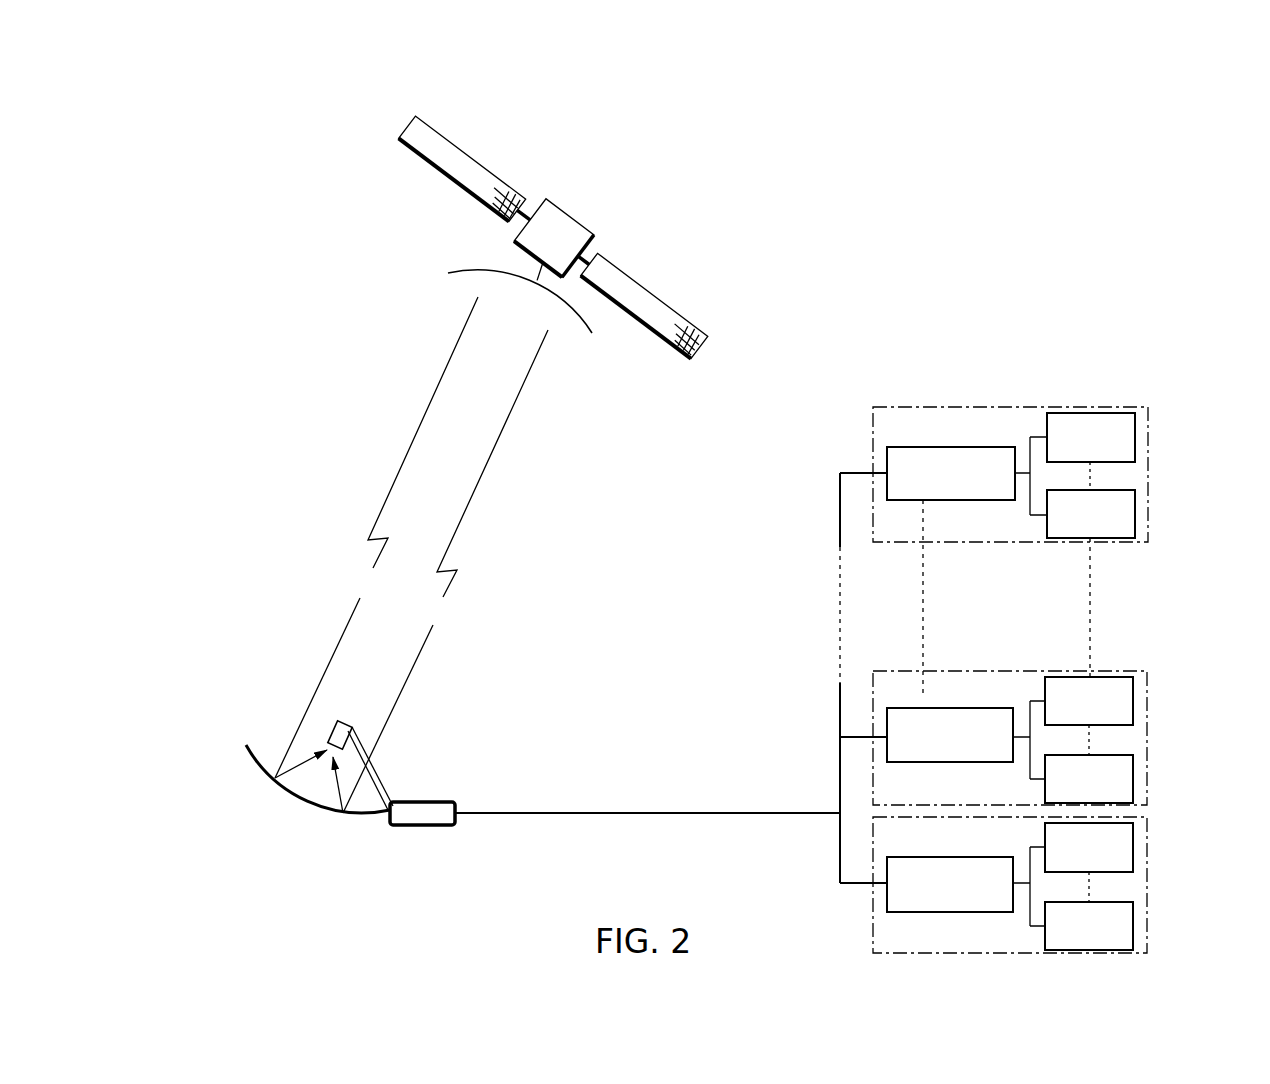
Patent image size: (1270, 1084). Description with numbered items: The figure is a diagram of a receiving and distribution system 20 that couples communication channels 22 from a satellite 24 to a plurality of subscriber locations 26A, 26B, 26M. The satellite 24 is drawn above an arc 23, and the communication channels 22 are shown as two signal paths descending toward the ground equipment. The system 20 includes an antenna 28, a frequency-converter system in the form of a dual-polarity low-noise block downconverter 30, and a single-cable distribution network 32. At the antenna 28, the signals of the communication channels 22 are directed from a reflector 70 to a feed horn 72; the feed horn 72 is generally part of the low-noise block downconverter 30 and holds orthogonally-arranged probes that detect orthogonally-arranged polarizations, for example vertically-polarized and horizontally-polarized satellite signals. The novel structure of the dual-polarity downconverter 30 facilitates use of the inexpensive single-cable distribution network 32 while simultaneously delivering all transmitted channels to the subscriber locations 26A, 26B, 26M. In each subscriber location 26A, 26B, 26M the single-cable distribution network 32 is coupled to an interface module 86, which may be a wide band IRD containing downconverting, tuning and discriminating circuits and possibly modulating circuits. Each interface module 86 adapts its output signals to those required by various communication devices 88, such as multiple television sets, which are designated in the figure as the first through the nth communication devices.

The receiving and distribution system 20 is at (963, 305).
The communication channels 22 is at (411, 555).
The satellite coverage arc 23 is at (592, 333).
The satellite 24 is at (597, 225).
The subscriber location 26M is at (1155, 423).
The subscriber location 26B is at (1152, 692).
The subscriber location 26A is at (1150, 837).
The antenna 28 is at (288, 745).
The dual-polarity low-noise block downconverter 30 is at (442, 792).
The single-cable distribution network 32 is at (840, 763).
The reflector 70 is at (250, 752).
The feed horn 72 is at (330, 724).
The interface module 86 is at (900, 447).
The communication devices 88 is at (1137, 515).